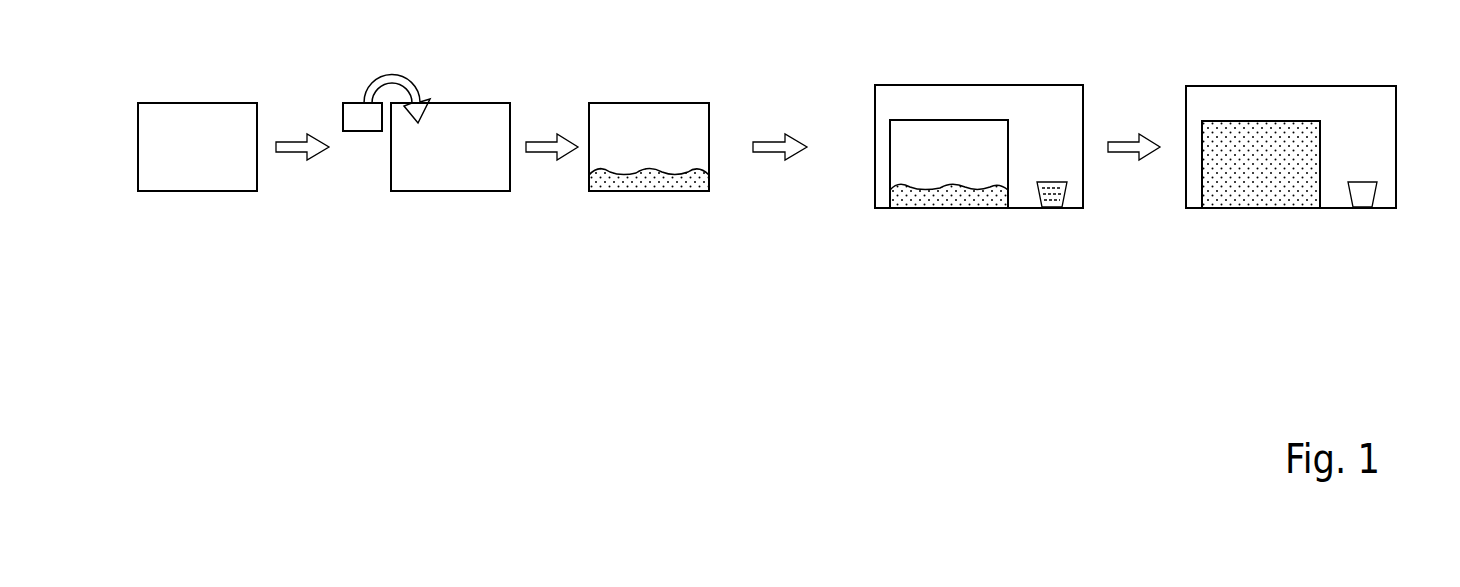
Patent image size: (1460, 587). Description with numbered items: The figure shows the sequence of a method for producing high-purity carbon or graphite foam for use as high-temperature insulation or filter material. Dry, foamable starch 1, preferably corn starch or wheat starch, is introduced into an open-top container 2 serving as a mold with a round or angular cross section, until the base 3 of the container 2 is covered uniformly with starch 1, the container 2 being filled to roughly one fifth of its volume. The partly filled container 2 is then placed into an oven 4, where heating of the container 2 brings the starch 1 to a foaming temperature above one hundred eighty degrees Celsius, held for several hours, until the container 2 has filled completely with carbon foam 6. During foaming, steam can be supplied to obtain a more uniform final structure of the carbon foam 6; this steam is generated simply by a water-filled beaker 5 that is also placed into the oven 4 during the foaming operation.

The starch 1 is at (415, 90).
The container 2 is at (138, 150).
The base 3 is at (197, 192).
The oven 4 is at (875, 115).
The water-filled beaker 5 is at (1050, 207).
The carbon foam 6 is at (1265, 175).